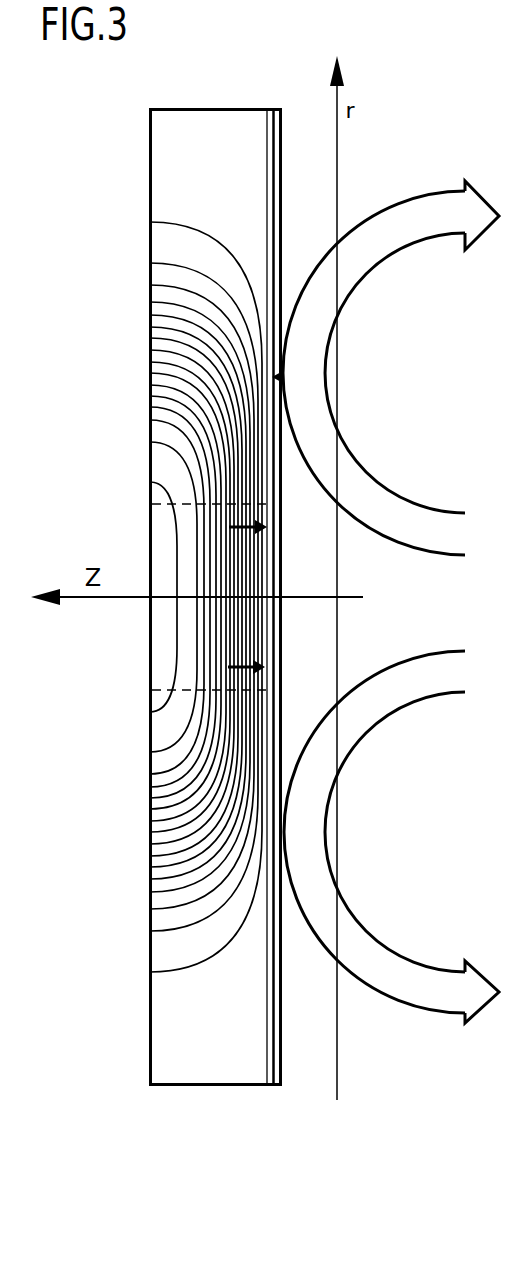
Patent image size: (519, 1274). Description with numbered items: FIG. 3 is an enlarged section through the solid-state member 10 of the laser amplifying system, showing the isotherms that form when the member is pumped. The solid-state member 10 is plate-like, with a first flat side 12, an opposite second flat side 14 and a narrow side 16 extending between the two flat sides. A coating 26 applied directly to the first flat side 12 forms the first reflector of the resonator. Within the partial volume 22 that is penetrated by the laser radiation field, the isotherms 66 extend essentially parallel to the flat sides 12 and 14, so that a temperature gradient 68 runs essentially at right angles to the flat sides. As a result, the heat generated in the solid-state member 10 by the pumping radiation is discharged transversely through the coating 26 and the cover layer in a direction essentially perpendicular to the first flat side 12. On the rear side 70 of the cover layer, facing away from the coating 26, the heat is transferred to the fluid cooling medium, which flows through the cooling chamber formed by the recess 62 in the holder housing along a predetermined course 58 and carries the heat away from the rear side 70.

The solid-state member 10 is at (180, 182).
The second flat side 14 is at (150, 137).
The narrow side 16 is at (182, 108).
The coating 26 is at (267, 163).
The first flat side 12 is at (270, 137).
The recess 62 is at (280, 203).
The partial volume 22 is at (200, 534).
The isotherms 66 is at (188, 962).
The temperature gradient 68 is at (240, 660).
The rear side 70 is at (278, 377).
The predetermined course 58 is at (373, 490).